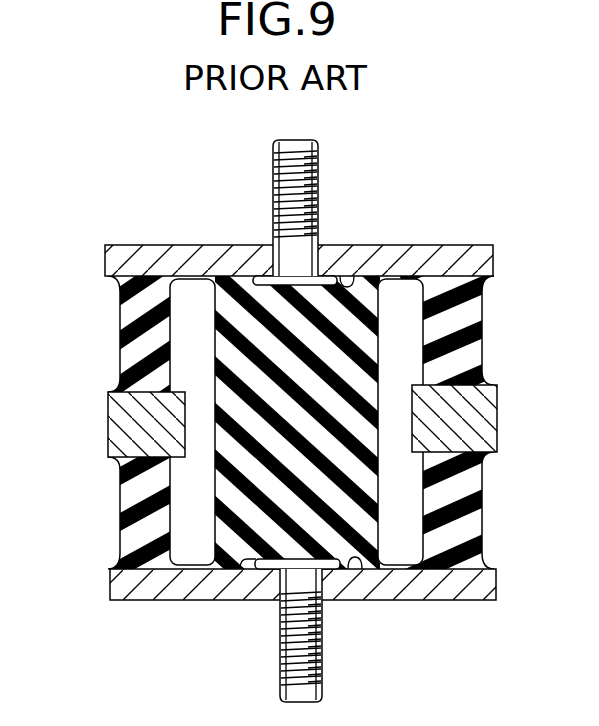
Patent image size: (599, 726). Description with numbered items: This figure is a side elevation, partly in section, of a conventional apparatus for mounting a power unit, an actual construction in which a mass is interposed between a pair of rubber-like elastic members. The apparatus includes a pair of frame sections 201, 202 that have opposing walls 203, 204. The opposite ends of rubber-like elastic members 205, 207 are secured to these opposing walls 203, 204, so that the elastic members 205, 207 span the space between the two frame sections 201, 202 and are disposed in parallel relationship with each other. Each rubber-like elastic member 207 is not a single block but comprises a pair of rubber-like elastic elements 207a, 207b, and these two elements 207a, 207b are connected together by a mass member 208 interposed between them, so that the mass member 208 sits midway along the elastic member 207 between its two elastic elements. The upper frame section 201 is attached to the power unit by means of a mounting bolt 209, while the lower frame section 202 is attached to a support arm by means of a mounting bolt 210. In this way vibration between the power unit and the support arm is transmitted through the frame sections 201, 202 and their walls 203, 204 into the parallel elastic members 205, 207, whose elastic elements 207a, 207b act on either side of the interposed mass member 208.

The frame section 201 is at (448, 256).
The frame section 202 is at (465, 580).
The opposing wall 203 is at (345, 285).
The opposing wall 204 is at (355, 575).
The rubber-like elastic member 205 is at (238, 572).
The rubber-like elastic member 207 is at (115, 363).
The rubber-like elastic element 207a is at (128, 320).
The rubber-like elastic element 207b is at (128, 500).
The mass member 208 is at (120, 426).
The mounting bolt 209 is at (290, 178).
The mounting bolt 210 is at (297, 659).